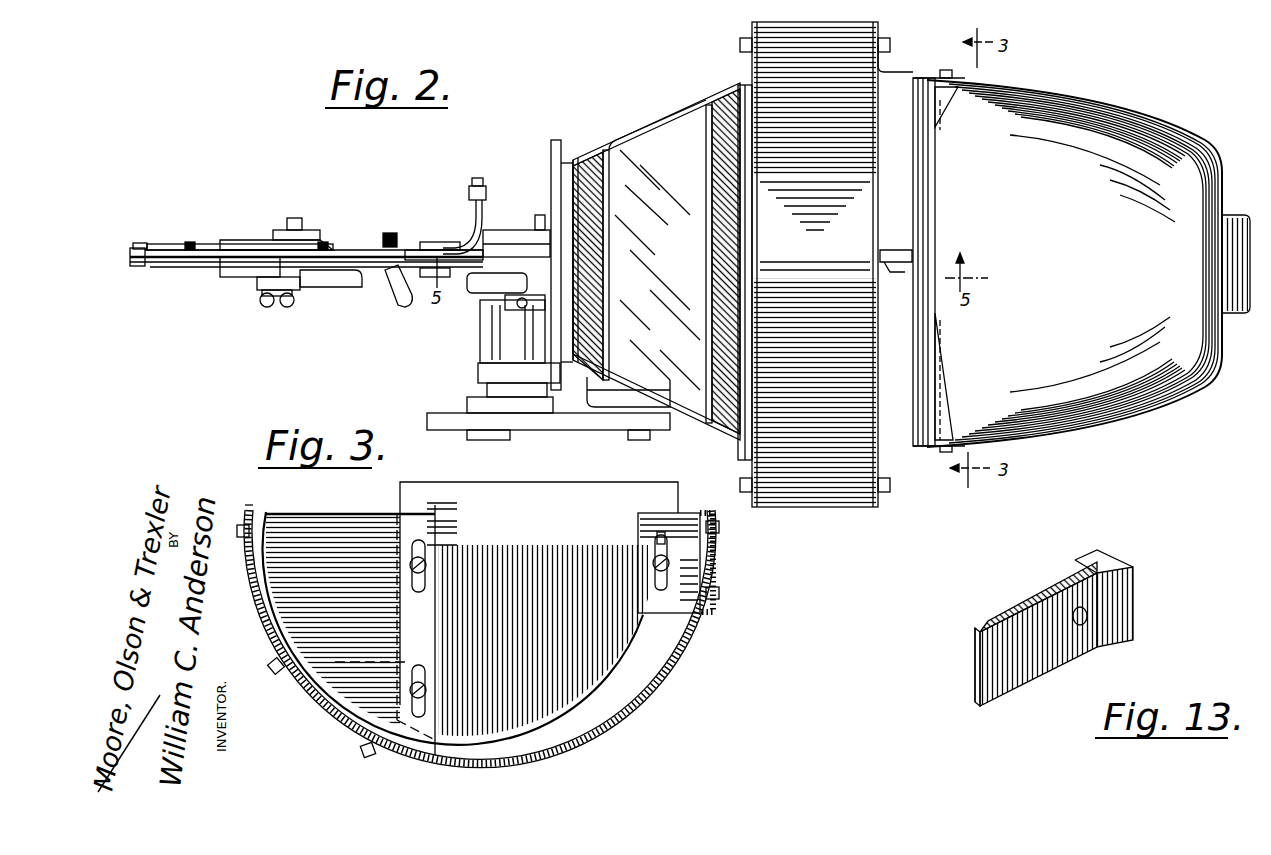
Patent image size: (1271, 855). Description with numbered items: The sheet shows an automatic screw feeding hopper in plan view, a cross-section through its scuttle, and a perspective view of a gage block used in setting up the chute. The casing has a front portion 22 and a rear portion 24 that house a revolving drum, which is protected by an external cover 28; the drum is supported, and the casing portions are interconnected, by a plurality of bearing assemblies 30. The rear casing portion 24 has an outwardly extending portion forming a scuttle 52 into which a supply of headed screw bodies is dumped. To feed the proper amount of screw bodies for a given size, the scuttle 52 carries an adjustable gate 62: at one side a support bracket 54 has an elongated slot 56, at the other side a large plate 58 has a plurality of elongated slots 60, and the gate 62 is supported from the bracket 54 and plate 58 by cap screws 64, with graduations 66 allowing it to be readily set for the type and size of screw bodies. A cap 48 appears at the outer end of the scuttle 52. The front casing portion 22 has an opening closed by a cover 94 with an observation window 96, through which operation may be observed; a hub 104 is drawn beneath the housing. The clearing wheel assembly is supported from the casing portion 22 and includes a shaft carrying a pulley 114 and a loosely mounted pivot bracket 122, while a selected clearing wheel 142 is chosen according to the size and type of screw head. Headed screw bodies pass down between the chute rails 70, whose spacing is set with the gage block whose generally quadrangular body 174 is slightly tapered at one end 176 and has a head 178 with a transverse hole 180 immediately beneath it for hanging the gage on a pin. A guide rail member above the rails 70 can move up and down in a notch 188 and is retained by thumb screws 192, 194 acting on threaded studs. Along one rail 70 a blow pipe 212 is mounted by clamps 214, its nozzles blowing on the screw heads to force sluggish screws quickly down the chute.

In FIG. 2, the front casing portion 22 is at (745, 445).
In FIG. 2, the rear casing portion 24 is at (899, 80).
In FIG. 2, the external cover 28 is at (855, 507).
In FIG. 2, the bearing assemblies 30 is at (890, 486).
In FIG. 2, the cap 48 is at (1236, 214).
In FIG. 2, the scuttle 52 is at (1131, 420).
In FIG. 3, the scuttle 52 is at (656, 700).
In FIG. 2, the support bracket 54 is at (949, 78).
In FIG. 3, the support bracket 54 is at (700, 586).
In FIG. 3, the elongated slot 56 is at (656, 543).
In FIG. 2, the plate 58 is at (945, 367).
In FIG. 3, the plate 58 is at (285, 530).
In FIG. 3, the elongated slots 60 is at (412, 668).
In FIG. 2, the adjustable gate 62 is at (936, 240).
In FIG. 3, the adjustable gate 62 is at (560, 495).
In FIG. 3, the cap screws 64 is at (428, 566).
In FIG. 3, the graduations 66 is at (440, 523).
In FIG. 2, the chute rails 70 is at (172, 268).
In FIG. 2, the cover 94 is at (589, 160).
In FIG. 2, the observation window 96 is at (639, 140).
In FIG. 2, the hub 104 is at (563, 420).
In FIG. 2, the pulley 114 is at (435, 413).
In FIG. 2, the pivot bracket 122 is at (478, 370).
In FIG. 2, the clearing wheel 142 is at (497, 240).
In FIG. 13, the gage block body 174 is at (1028, 628).
In FIG. 13, the tapered end 176 is at (978, 660).
In FIG. 13, the head 178 is at (1128, 600).
In FIG. 13, the transverse hole 180 is at (1075, 608).
In FIG. 2, the notch 188 is at (139, 243).
In FIG. 2, the thumb screw 192 is at (268, 308).
In FIG. 2, the thumb screw 194 is at (466, 308).
In FIG. 2, the blow pipe 212 is at (466, 212).
In FIG. 2, the clamps 214 is at (191, 242).